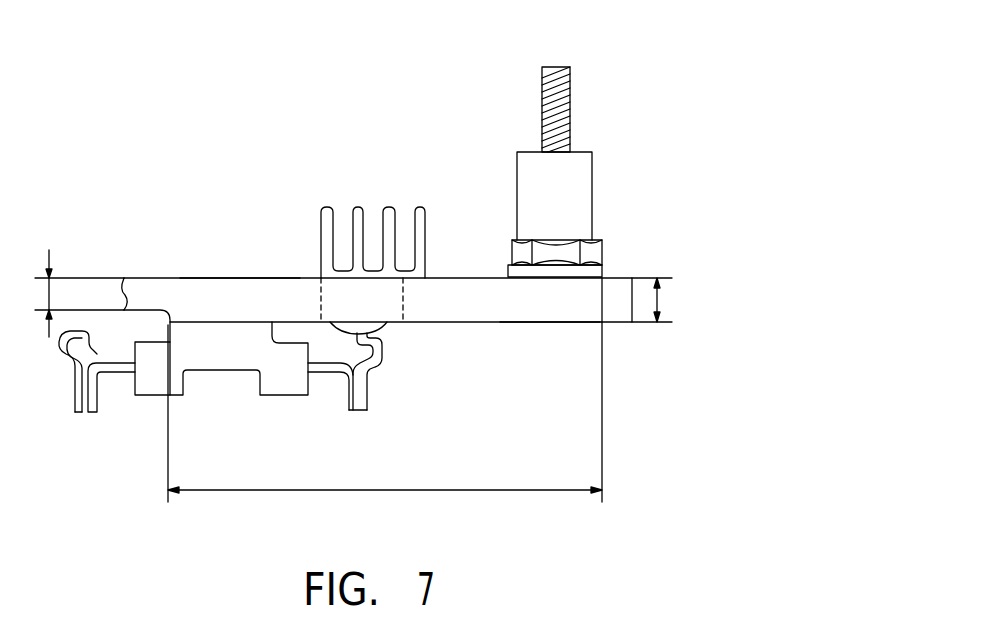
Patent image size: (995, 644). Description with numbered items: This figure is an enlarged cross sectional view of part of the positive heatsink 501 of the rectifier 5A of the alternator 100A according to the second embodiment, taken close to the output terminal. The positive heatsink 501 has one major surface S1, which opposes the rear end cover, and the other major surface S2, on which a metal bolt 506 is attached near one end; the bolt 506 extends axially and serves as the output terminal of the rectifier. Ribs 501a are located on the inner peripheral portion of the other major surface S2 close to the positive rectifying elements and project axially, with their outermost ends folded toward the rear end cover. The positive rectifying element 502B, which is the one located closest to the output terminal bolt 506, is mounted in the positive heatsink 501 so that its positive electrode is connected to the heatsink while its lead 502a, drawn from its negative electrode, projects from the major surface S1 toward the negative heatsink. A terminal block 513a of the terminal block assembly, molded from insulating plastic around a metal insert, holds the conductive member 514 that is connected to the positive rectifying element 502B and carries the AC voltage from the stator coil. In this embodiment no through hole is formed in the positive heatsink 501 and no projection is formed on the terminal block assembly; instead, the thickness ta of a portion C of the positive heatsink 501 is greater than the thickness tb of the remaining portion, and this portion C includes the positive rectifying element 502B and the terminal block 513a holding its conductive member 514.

The alternator 100A is at (727, 34).
The rectifier 5A is at (658, 145).
The bolt 506 is at (552, 70).
The positive heatsink 501 is at (455, 293).
The ribs 501a is at (358, 212).
The positive rectifying element 502B is at (382, 328).
The lead 502a is at (360, 388).
The conductive member 514 is at (353, 390).
The terminal block 513a is at (222, 355).
The major surface S1 is at (560, 323).
The other major surface S2 is at (243, 280).
The thickness ta is at (663, 300).
The thickness tb is at (72, 293).
The portion C is at (385, 412).